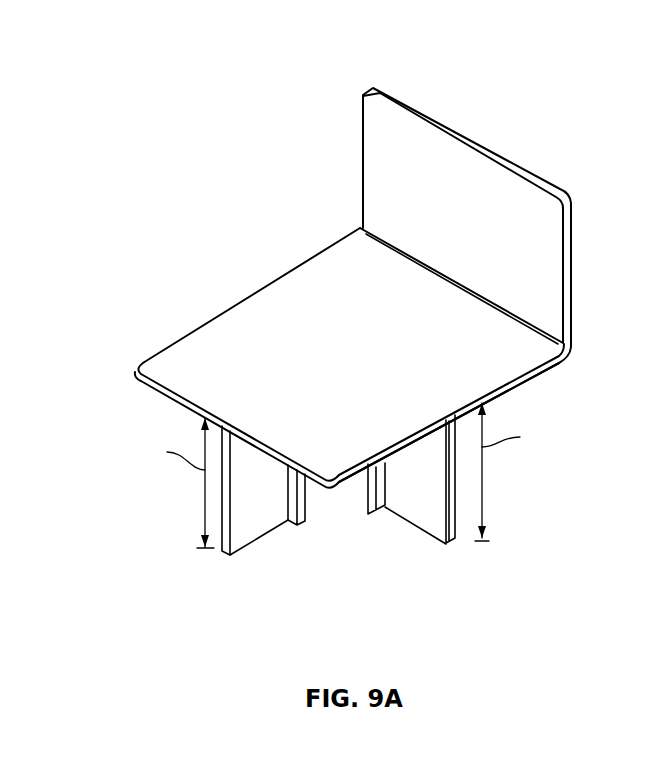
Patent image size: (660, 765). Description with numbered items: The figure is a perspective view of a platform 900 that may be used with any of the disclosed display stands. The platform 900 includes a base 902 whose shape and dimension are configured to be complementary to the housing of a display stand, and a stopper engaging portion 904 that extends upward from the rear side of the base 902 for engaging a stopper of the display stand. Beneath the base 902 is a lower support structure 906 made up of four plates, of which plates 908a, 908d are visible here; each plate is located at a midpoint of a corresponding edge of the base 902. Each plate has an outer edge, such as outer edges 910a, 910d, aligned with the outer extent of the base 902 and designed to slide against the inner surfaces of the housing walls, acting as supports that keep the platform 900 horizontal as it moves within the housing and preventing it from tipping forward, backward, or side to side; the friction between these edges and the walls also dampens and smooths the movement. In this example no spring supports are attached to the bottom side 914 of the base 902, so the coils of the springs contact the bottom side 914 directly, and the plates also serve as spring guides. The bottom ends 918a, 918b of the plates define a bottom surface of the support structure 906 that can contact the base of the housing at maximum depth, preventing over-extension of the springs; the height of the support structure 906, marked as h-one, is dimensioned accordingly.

The platform 900 is at (547, 86).
The base 902 is at (390, 370).
The stopper engaging portion 904 is at (497, 225).
The lower support structure 906 is at (190, 508).
The plate 908a is at (237, 530).
The plate 908d is at (407, 494).
The outer edge 910a is at (218, 553).
The outer edge 910d is at (453, 537).
The bottom side 914 is at (536, 380).
The bottom end 918a is at (287, 524).
The bottom end 918b is at (430, 533).